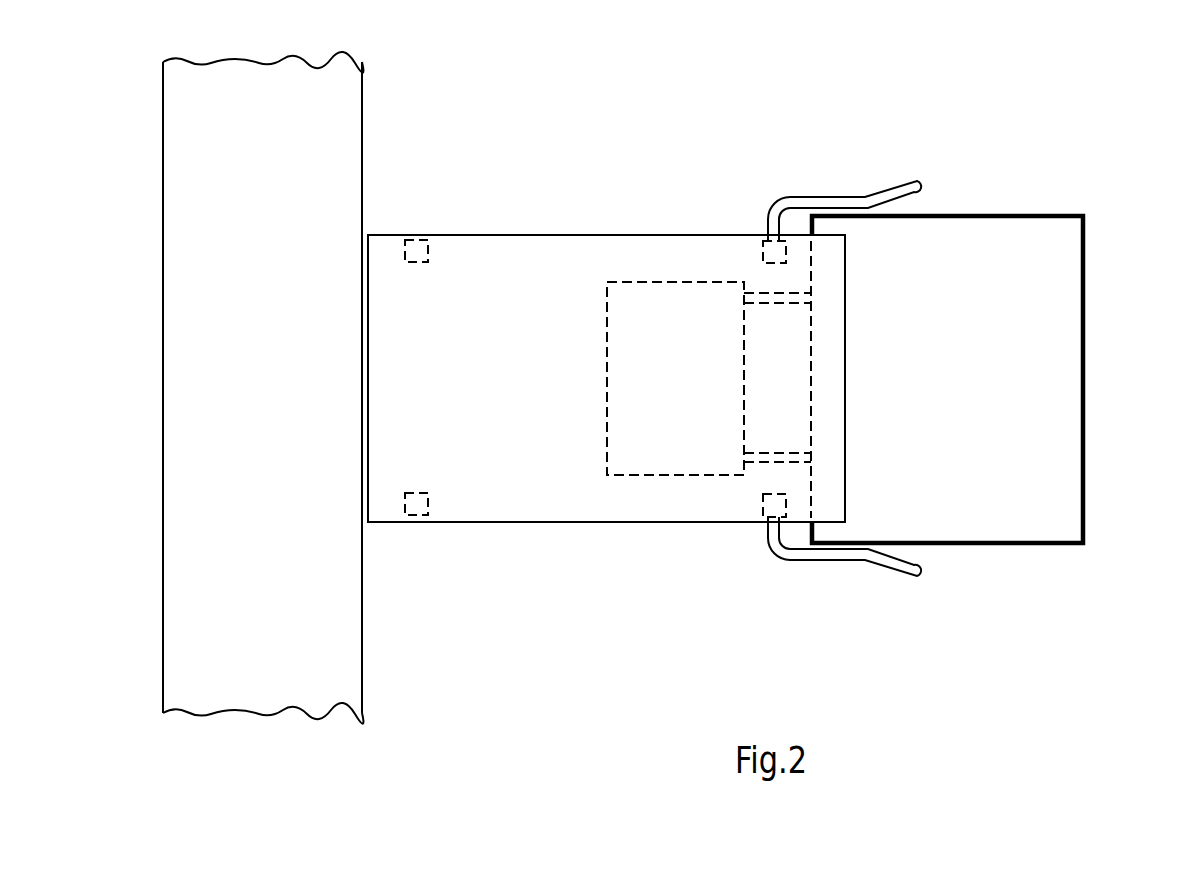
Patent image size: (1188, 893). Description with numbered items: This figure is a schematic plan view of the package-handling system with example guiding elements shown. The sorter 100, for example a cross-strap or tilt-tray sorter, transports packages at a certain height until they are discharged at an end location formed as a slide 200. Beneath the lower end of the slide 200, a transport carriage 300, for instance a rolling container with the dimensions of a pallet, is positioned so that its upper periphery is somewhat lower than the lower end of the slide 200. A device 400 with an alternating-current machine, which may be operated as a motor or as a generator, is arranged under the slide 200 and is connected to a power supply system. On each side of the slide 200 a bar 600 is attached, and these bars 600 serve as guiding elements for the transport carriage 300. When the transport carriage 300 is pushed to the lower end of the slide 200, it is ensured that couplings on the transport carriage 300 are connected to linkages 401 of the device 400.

The sorter 100 is at (338, 130).
The slide 200 is at (495, 497).
The transport carriage 300 is at (1085, 463).
The device 400 is at (643, 457).
The linkages 401 is at (757, 458).
The bar 600 is at (837, 553).